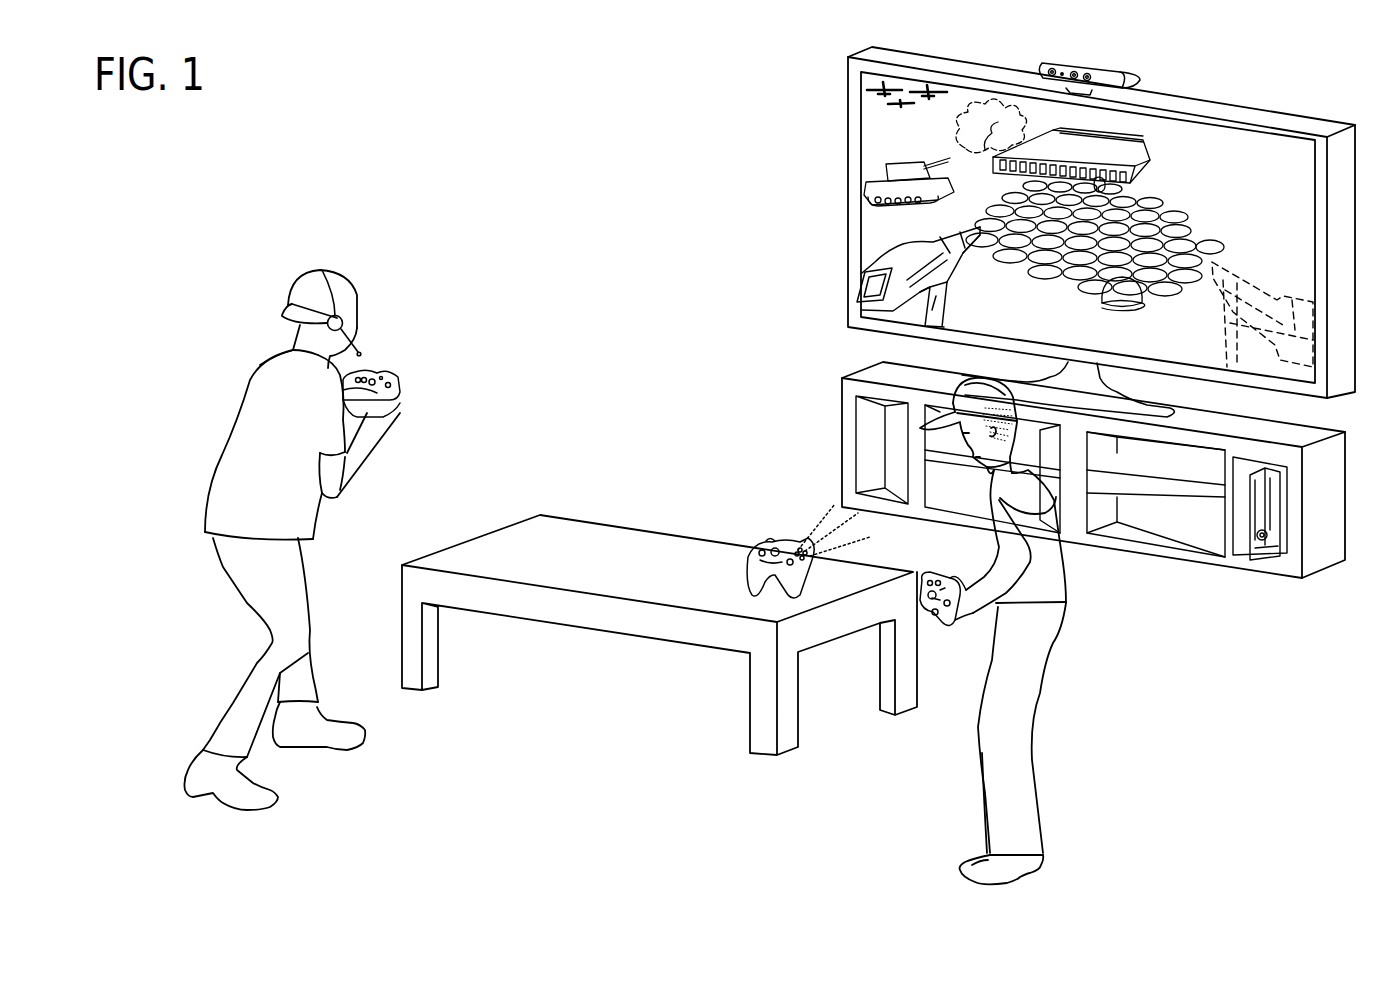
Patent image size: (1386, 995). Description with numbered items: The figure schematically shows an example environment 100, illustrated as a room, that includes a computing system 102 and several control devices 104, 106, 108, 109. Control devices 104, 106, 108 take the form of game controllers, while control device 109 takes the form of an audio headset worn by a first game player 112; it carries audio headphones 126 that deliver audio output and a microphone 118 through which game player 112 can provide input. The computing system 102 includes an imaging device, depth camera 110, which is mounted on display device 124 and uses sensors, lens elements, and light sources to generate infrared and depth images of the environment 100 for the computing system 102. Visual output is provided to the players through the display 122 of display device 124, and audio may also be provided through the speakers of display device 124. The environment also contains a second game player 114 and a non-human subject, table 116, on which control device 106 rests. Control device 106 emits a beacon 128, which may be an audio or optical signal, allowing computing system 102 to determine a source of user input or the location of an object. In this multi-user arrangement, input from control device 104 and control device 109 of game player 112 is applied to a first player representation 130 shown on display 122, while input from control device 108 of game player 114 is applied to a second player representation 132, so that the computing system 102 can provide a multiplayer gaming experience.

The environment 100 is at (378, 127).
The computing system 102 is at (1263, 575).
The control device 104 is at (400, 378).
The control device 106 is at (773, 543).
The control device 108 is at (935, 632).
The control device 109 is at (312, 258).
The depth camera 110 is at (1097, 60).
The game player 112 is at (299, 525).
The game player 114 is at (1063, 555).
The table 116 is at (570, 517).
The microphone 118 is at (375, 360).
The display 122 is at (1150, 162).
The display device 124 is at (1101, 232).
The audio headphones 126 is at (342, 293).
The beacon 128 is at (806, 508).
The first player representation 130 is at (870, 242).
The second player representation 132 is at (1238, 256).